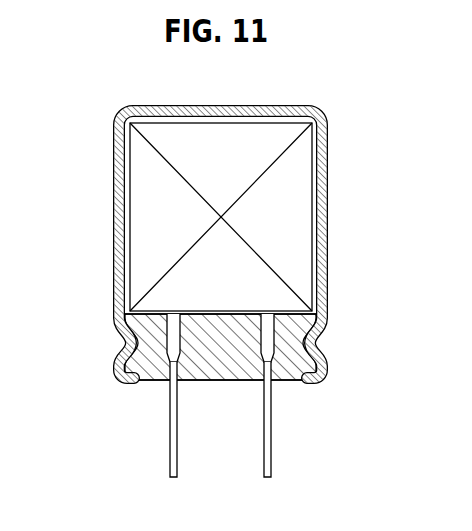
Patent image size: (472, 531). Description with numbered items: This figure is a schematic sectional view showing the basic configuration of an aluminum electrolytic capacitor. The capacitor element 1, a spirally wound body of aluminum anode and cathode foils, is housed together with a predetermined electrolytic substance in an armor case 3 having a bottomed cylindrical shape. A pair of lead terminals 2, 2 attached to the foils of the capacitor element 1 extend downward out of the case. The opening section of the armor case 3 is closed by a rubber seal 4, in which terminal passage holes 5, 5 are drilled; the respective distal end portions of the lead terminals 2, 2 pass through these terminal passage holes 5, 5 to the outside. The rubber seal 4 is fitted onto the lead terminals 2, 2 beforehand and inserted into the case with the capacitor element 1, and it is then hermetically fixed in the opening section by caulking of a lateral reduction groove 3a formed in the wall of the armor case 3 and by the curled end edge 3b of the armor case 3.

The capacitor element 1 is at (293, 187).
The lead terminal 2 is at (167, 431).
The armor case 3 is at (113, 168).
The lateral reduction groove 3a is at (122, 340).
The end edge 3b is at (123, 387).
The rubber seal 4 is at (298, 331).
The terminal passage hole 5 is at (163, 328).